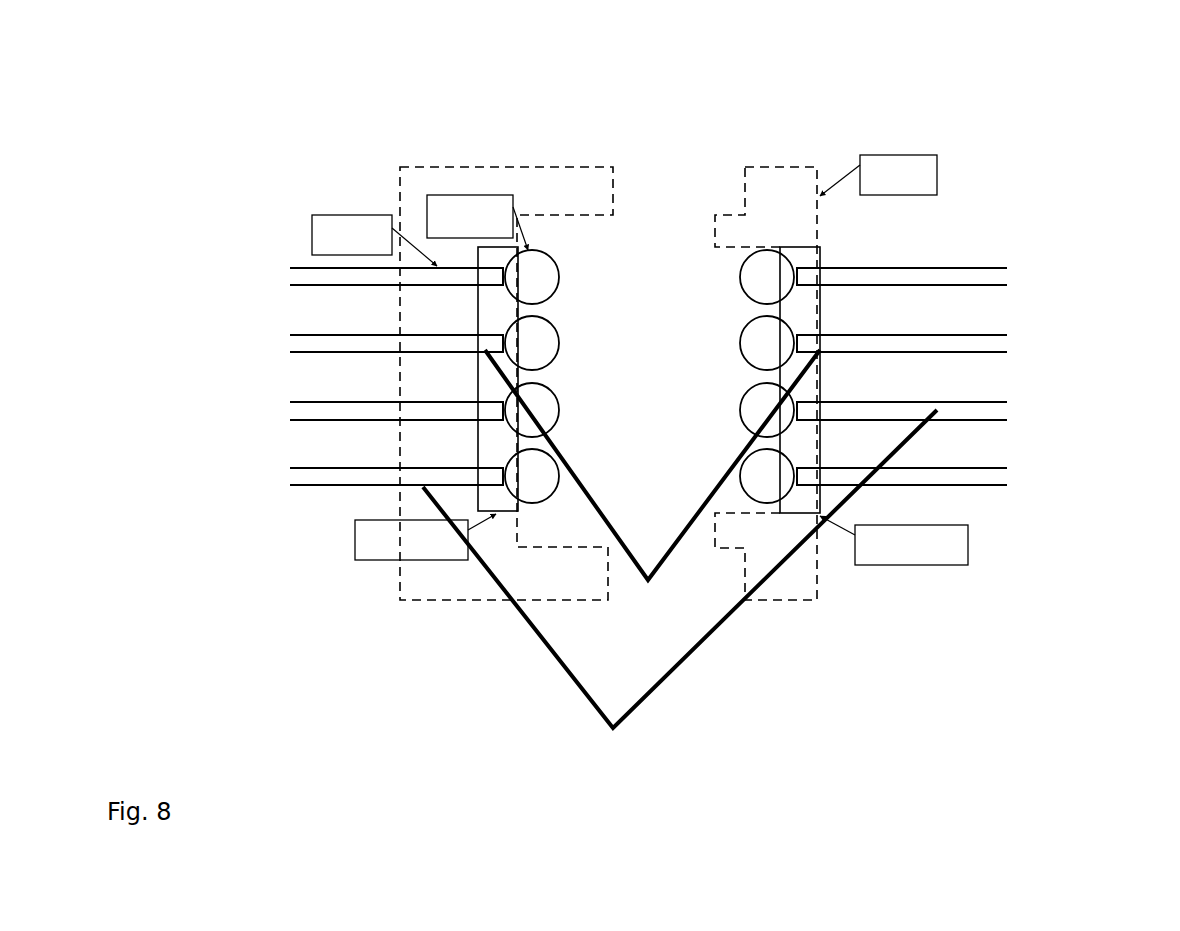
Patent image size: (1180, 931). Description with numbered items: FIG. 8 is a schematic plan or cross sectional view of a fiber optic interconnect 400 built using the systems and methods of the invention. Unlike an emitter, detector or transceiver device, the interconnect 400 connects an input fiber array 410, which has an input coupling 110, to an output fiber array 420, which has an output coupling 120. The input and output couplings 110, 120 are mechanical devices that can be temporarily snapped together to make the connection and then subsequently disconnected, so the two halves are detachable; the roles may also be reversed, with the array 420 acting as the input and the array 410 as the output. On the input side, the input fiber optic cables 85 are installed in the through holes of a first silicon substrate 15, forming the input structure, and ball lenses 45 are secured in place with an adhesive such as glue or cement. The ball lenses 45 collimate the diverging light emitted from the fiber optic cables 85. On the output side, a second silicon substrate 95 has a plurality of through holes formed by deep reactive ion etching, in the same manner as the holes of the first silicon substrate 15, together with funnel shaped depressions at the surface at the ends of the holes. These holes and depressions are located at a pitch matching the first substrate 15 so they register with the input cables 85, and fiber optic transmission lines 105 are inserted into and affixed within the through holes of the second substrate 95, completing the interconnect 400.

The interconnect 400 is at (1046, 695).
The input fiber array 410 is at (262, 167).
The output fiber array 420 is at (1003, 130).
The input coupling 110 is at (470, 185).
The output coupling 120 is at (773, 187).
The first silicon substrate 15 is at (485, 315).
The ball lenses 45 is at (525, 263).
The second silicon substrate 95 is at (823, 257).
The fiber optic cables 85 is at (652, 489).
The fiber optic transmission lines 105 is at (680, 592).